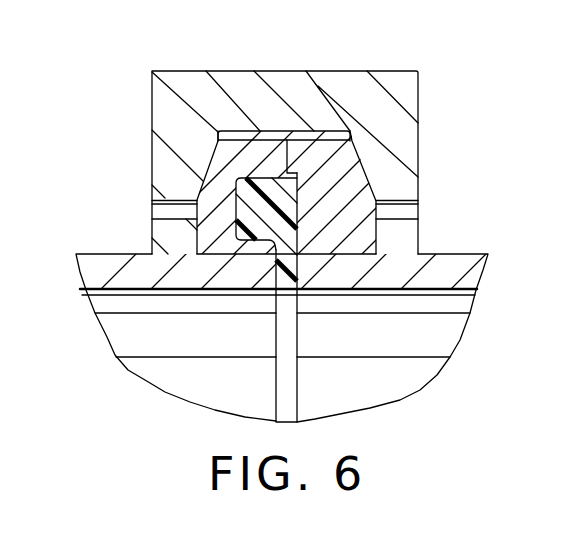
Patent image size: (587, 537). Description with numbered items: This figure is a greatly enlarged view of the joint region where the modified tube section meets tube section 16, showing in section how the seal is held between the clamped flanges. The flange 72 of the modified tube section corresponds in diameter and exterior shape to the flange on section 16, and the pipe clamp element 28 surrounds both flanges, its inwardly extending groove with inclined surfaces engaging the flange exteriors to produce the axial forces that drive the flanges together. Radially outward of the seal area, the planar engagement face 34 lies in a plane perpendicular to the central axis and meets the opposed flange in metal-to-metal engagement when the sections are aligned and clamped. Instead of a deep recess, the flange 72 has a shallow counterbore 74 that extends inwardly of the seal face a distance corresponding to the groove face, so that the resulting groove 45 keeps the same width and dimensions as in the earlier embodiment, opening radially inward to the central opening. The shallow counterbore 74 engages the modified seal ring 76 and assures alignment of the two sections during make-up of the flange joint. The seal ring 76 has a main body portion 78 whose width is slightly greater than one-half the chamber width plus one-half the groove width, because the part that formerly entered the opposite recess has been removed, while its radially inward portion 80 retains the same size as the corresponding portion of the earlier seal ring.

The tube section 16 is at (98, 275).
The pipe clamp element 28 is at (152, 105).
The planar engagement face 34 is at (316, 131).
The groove 45 is at (288, 305).
The flange 72 is at (399, 216).
The shallow counterbore 74 is at (275, 258).
The seal ring 76 is at (198, 301).
The main body portion 78 is at (316, 188).
The radially inward portion 80 is at (292, 263).